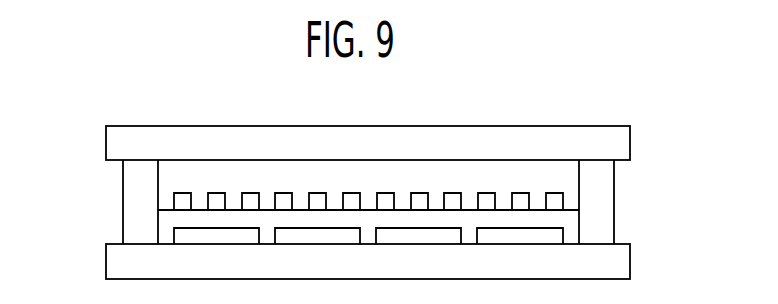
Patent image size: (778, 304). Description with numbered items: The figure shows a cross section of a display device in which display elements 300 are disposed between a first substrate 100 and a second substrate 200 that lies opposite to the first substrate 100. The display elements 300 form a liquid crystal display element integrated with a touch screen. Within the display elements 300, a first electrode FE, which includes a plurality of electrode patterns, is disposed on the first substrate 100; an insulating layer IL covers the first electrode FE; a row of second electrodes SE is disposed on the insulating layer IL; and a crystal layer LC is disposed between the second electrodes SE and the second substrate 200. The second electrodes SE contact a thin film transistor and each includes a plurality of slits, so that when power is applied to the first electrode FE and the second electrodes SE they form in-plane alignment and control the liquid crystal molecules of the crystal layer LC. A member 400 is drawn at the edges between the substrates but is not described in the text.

The first substrate 100 is at (123, 264).
The second substrate 200 is at (123, 143).
The display elements 300 is at (713, 140).
The sealing member 400 is at (138, 208).
The crystal layer LC is at (562, 178).
The second electrodes SE is at (562, 199).
The insulating layer IL is at (572, 222).
The first electrode FE is at (556, 236).